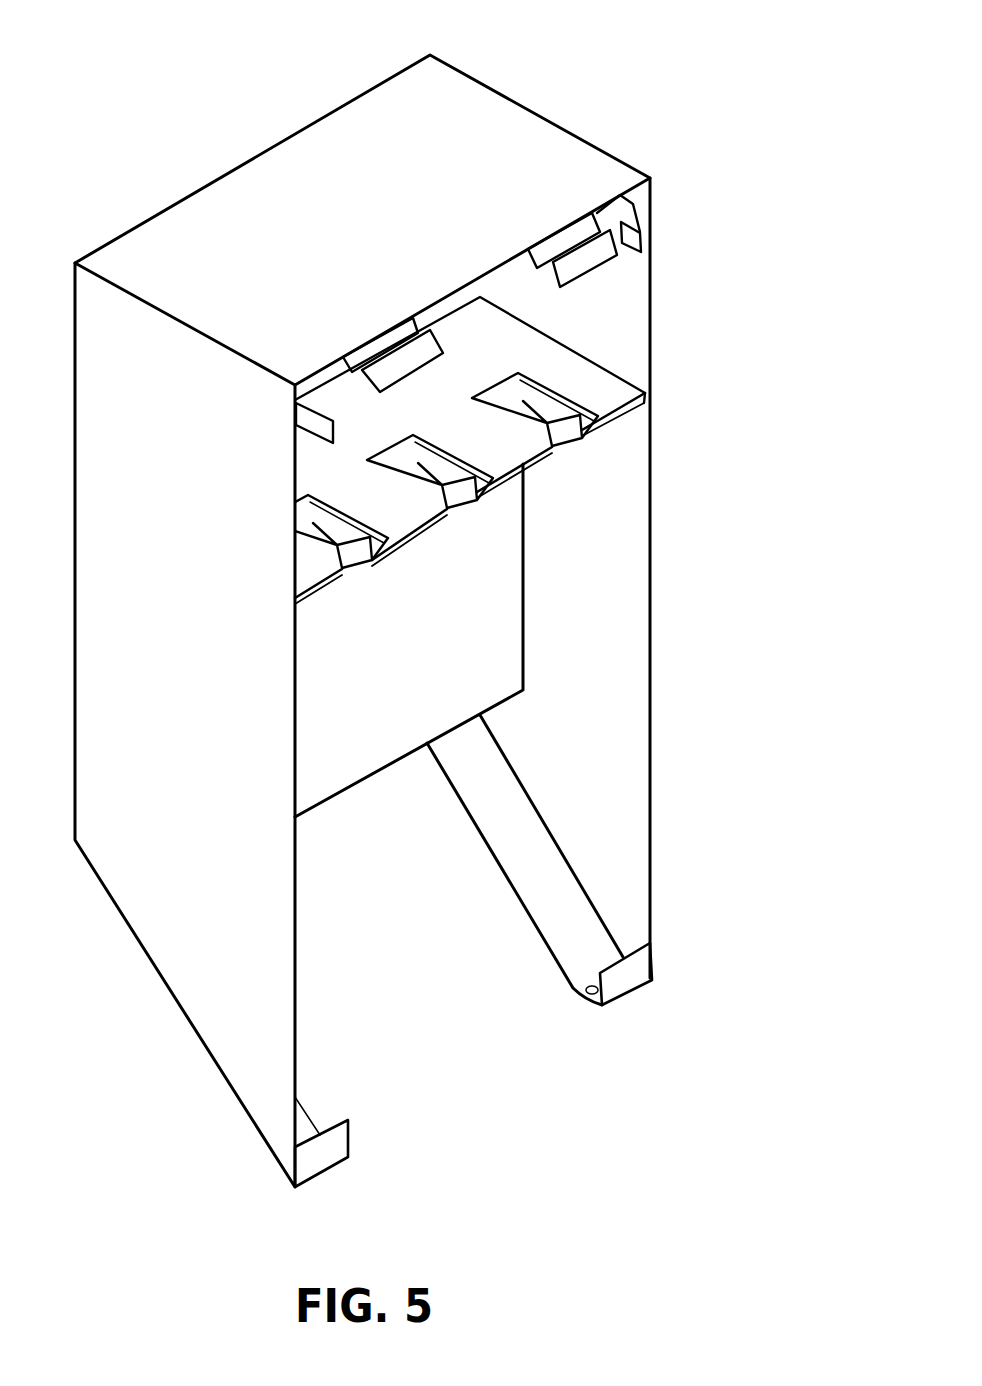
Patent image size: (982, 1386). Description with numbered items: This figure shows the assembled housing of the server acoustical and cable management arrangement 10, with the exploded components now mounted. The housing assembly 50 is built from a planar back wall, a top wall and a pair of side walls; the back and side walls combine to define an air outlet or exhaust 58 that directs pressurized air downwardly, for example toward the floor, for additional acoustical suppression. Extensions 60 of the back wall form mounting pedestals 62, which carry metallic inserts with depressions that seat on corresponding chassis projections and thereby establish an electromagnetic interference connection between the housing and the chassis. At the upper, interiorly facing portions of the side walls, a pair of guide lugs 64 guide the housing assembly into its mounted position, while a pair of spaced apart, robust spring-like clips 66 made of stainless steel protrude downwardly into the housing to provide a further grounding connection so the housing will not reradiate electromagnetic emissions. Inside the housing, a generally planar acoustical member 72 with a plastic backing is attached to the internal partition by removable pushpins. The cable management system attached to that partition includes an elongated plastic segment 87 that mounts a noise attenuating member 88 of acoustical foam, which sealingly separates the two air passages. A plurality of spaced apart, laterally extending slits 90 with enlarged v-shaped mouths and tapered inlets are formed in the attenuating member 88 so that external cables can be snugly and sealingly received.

The dispensing container 10 is at (142, 207).
The housing assembly 50 is at (548, 122).
The air outlet 58 is at (394, 903).
The extensions 60 is at (467, 786).
The mounting pedestals 62 is at (600, 1003).
The guide lugs 64 is at (641, 240).
The spring-like clips 66 is at (577, 258).
The acoustical member 72 is at (428, 607).
The elongated segment 87 is at (444, 412).
The noise attenuating member 88 is at (533, 473).
The slits 90 is at (520, 373).